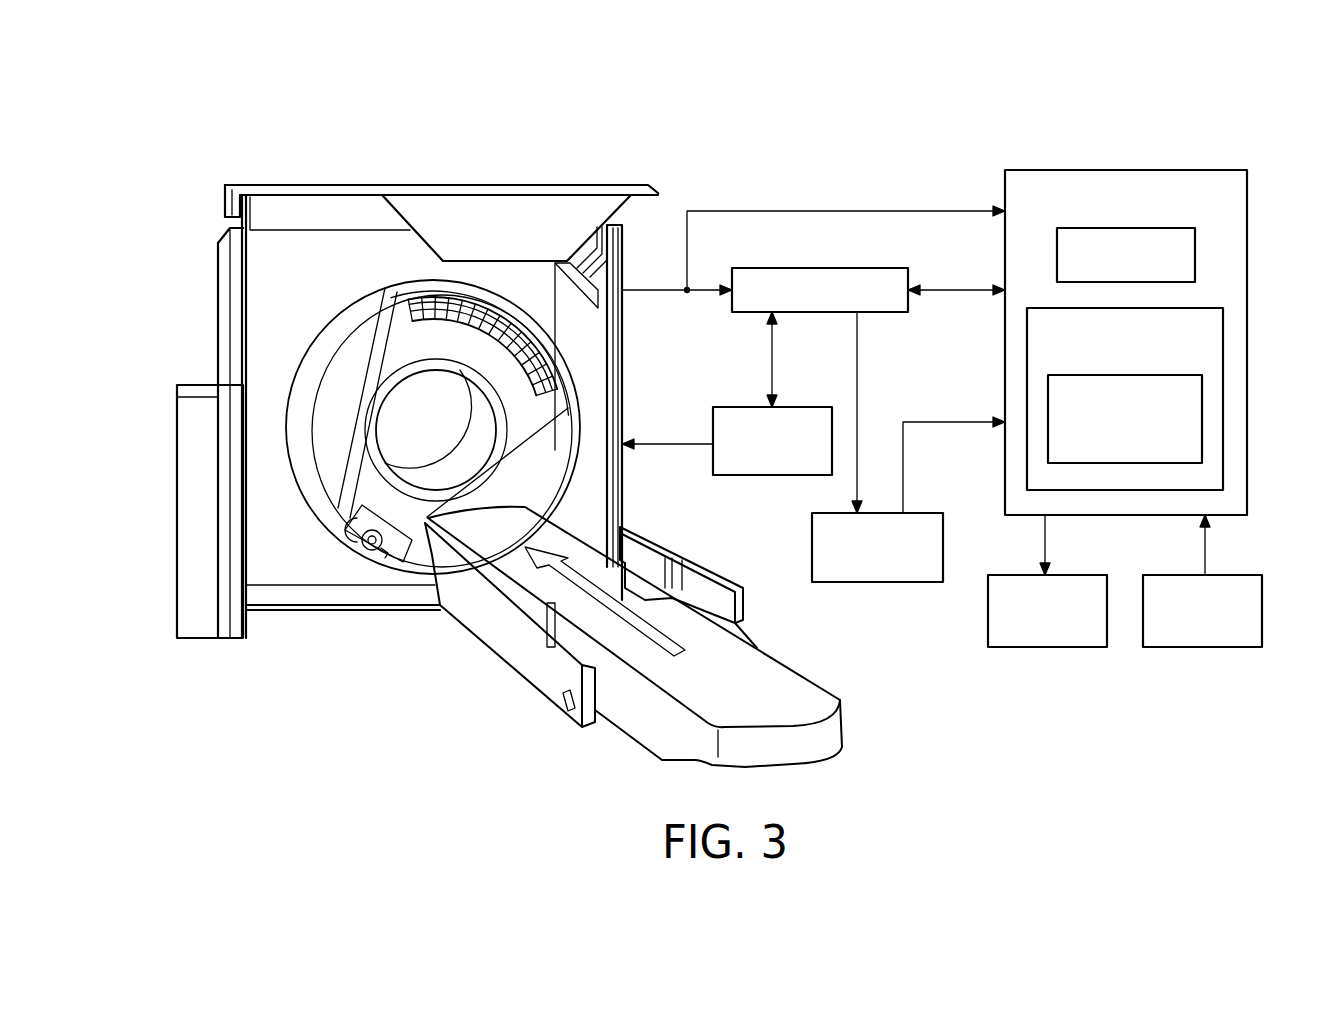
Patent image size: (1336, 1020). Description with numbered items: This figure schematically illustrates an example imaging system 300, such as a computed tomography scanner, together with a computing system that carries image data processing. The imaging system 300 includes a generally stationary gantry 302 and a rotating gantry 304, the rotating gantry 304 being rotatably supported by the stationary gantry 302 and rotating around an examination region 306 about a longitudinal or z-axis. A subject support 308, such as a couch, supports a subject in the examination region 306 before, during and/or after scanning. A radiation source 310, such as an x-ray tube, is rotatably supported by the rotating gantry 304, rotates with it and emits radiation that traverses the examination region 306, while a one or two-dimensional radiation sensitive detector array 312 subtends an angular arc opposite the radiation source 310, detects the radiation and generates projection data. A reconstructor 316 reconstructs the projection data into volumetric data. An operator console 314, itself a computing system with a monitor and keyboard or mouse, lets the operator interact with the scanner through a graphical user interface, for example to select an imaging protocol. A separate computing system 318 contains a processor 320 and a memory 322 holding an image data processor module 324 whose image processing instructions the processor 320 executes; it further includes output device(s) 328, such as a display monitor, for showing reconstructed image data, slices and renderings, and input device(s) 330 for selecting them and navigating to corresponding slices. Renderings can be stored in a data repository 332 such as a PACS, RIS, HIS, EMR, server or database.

The imaging system 300 is at (165, 159).
The stationary gantry 302 is at (222, 290).
The rotating gantry 304 is at (402, 349).
The examination region 306 is at (437, 430).
The subject support 308 is at (838, 726).
The radiation source 310 is at (366, 550).
The detector array 312 is at (533, 320).
The operator console 314 is at (772, 476).
The reconstructor 316 is at (882, 313).
The computing system 318 is at (1127, 170).
The processor 320 is at (1197, 256).
The memory 322 is at (1225, 335).
The image data processor module 324 is at (1200, 420).
The output device(s) 328 is at (1045, 647).
The input device(s) 330 is at (1203, 647).
The data repository 332 is at (877, 583).